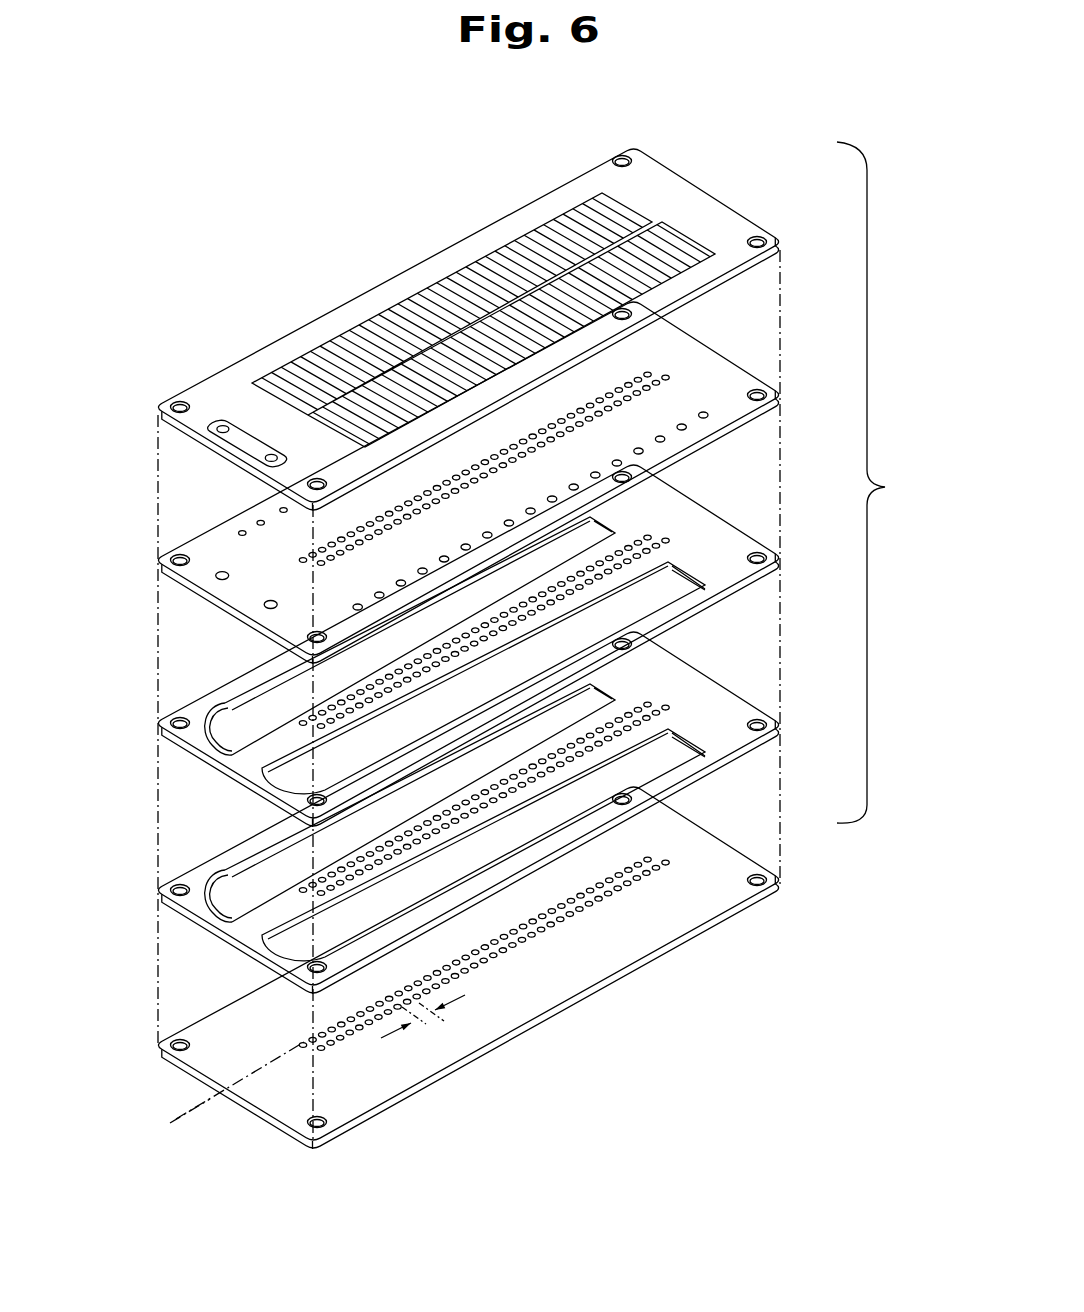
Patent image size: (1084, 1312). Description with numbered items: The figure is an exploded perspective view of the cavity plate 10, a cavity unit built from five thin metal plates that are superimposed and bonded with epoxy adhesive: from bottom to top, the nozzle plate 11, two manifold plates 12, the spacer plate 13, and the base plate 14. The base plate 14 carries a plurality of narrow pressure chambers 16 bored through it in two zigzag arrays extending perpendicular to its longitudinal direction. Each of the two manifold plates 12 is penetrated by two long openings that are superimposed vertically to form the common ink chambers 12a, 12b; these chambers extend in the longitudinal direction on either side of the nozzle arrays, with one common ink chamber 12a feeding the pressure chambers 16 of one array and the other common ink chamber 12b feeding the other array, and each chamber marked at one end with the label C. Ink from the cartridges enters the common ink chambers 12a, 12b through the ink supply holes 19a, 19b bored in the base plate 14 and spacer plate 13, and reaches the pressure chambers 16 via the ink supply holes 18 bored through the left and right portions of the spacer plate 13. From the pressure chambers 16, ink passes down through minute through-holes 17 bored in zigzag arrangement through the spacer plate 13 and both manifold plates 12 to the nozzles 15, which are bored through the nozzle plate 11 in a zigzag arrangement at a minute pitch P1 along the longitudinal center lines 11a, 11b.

The cavity plate 10 is at (887, 482).
The nozzle plate 11 is at (742, 845).
The center line 11a is at (209, 1110).
The center line 11b is at (216, 1105).
The manifold plate 12 is at (742, 513).
The common ink chamber 12a is at (262, 874).
The common ink chamber 12b is at (408, 905).
The spacer plate 13 is at (749, 360).
The base plate 14 is at (744, 203).
The nozzle 15 is at (511, 919).
The pressure chamber 16 is at (520, 323).
The through-hole 17 is at (667, 377).
The ink supply hole 18 is at (243, 533).
The ink supply hole 19a is at (212, 418).
The ink supply hole 19b is at (270, 605).
The common ink chamber C is at (710, 553).
The pitch P1 is at (426, 1028).